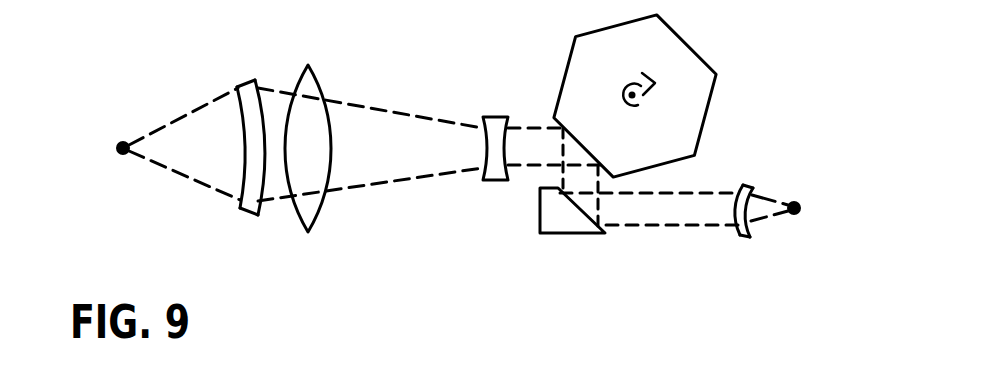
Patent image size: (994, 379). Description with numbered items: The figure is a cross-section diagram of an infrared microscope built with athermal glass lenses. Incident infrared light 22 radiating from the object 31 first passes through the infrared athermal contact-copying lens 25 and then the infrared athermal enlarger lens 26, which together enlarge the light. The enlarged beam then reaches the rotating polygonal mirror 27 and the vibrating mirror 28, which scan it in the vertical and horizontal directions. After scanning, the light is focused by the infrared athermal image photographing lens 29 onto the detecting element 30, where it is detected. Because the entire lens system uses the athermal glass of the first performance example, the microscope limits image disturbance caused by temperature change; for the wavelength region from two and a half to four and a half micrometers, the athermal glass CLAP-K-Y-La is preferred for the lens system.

The incident infrared light 22 is at (200, 112).
The infrared athermal contact-copying lens 25 is at (253, 209).
The infrared athermal enlarger lens 26 is at (321, 73).
The rotating polygonal mirror 27 is at (682, 38).
The vibrating mirror 28 is at (538, 222).
The infrared athermal image photographing lens 29 is at (745, 185).
The detecting element 30 is at (800, 208).
The object 31 is at (121, 145).